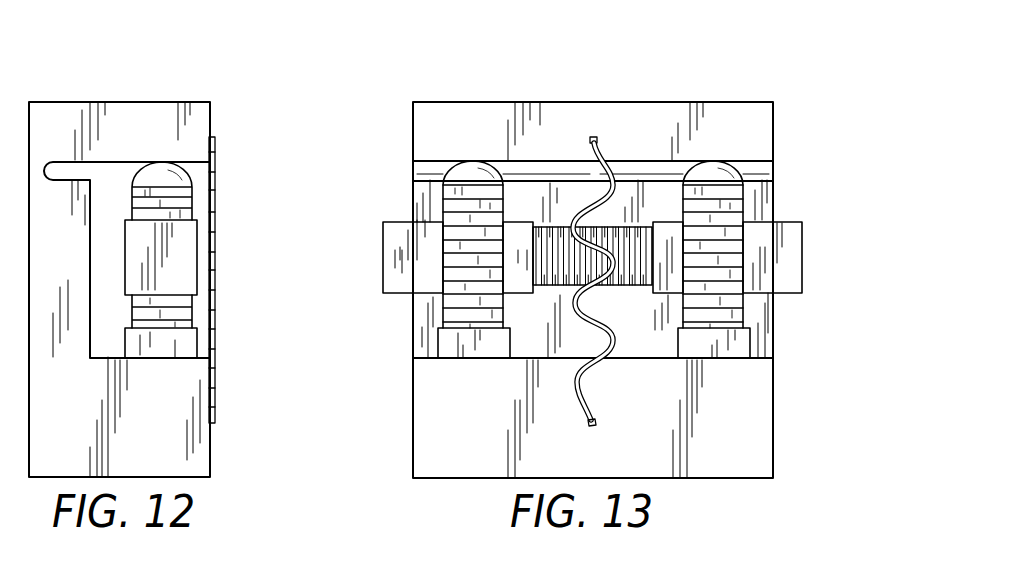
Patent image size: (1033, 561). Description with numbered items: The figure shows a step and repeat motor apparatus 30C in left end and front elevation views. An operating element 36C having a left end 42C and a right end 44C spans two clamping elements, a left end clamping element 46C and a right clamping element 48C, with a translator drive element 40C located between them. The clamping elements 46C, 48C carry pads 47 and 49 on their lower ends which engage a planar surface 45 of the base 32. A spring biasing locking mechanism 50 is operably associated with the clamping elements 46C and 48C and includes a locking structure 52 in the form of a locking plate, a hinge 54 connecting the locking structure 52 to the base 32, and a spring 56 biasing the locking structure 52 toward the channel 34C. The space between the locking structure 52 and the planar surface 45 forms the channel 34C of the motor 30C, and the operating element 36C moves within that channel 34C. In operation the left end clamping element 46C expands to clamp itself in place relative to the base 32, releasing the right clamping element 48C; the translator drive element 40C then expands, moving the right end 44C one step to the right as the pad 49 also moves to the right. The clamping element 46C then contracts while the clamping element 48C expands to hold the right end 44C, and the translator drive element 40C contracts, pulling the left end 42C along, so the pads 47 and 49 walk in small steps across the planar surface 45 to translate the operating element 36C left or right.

In FIG. 13, the step and repeat motor apparatus 30C is at (803, 137).
In FIG. 13, the base 32 is at (760, 443).
In FIG. 13, the channel 34C is at (438, 392).
In FIG. 13, the planar surface 45 is at (507, 347).
In FIG. 12, the operating element 36C is at (220, 289).
In FIG. 13, the operating element 36C is at (606, 238).
In FIG. 12, the left end 42C is at (183, 282).
In FIG. 13, the left end 42C is at (392, 247).
In FIG. 13, the right end 44C is at (792, 272).
In FIG. 12, the left end clamping element 46C is at (183, 310).
In FIG. 13, the left end clamping element 46C is at (475, 187).
In FIG. 13, the pad 47 is at (452, 348).
In FIG. 13, the right clamping element 48C is at (738, 202).
In FIG. 13, the pad 49 is at (740, 345).
In FIG. 13, the spring biasing locking mechanism 50 is at (641, 123).
In FIG. 13, the locking structure 52 is at (760, 150).
In FIG. 13, the hinge 54 is at (672, 168).
In FIG. 13, the spring 56 is at (602, 152).
In FIG. 13, the translator drive element 40C is at (632, 283).